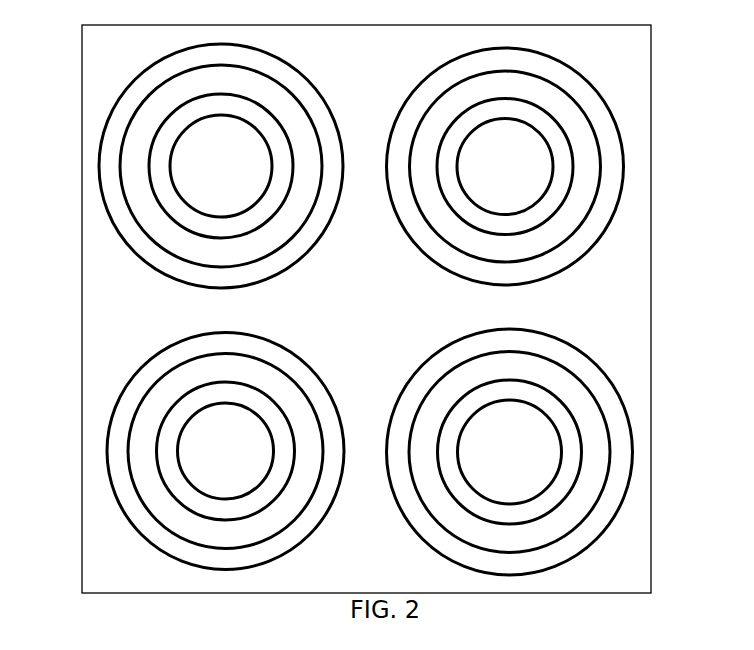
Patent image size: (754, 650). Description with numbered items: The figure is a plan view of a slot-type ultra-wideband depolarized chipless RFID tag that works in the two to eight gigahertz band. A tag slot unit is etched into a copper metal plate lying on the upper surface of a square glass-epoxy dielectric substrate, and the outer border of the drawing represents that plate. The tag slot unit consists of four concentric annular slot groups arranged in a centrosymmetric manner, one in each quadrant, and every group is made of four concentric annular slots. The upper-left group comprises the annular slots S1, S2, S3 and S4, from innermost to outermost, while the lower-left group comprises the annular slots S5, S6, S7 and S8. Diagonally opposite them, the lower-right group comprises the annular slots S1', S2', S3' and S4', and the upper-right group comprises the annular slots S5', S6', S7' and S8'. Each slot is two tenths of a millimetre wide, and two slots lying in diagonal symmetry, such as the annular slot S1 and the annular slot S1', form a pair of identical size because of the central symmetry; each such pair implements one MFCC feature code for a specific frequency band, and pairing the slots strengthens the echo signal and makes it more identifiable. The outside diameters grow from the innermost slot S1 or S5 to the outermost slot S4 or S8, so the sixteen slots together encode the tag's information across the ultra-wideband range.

The annular slot S1 is at (143, 166).
The annular slot S2 is at (154, 166).
The annular slot S3 is at (168, 166).
The annular slot S4 is at (179, 166).
The annular slot S5 is at (144, 451).
The annular slot S6 is at (155, 451).
The annular slot S7 is at (169, 451).
The annular slot S8 is at (179, 451).
The annular slot S1' is at (596, 452).
The annular slot S2' is at (586, 452).
The annular slot S3' is at (571, 452).
The annular slot S4' is at (560, 452).
The annular slot S5' is at (595, 167).
The annular slot S6' is at (585, 167).
The annular slot S7' is at (572, 166).
The annular slot S8' is at (560, 166).